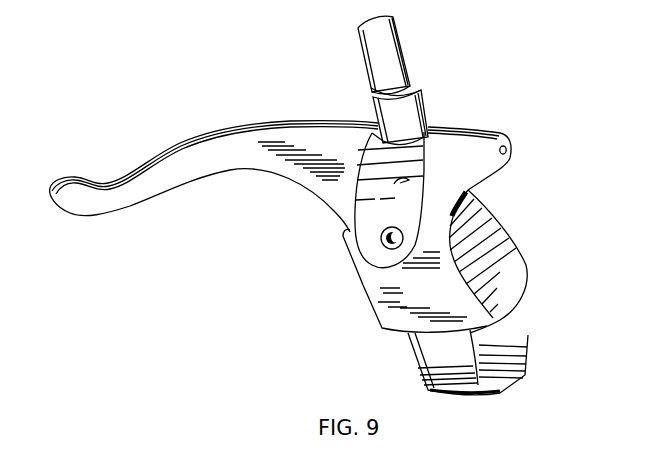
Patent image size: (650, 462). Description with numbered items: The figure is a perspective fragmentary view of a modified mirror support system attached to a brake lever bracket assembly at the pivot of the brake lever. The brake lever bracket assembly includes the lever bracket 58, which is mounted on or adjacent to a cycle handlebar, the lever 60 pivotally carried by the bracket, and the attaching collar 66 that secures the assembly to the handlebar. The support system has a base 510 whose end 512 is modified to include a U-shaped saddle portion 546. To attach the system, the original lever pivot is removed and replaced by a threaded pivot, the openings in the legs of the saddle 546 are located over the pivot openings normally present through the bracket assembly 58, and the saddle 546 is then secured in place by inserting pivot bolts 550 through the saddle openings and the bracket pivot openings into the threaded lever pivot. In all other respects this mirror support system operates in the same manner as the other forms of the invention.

The lever bracket 58 is at (375, 285).
The lever 60 is at (212, 155).
The attaching collar 66 is at (530, 340).
The base 510 is at (408, 44).
The end 512 is at (430, 102).
The U-shaped saddle portion 546 is at (409, 181).
The pivot bolt 550 is at (398, 244).